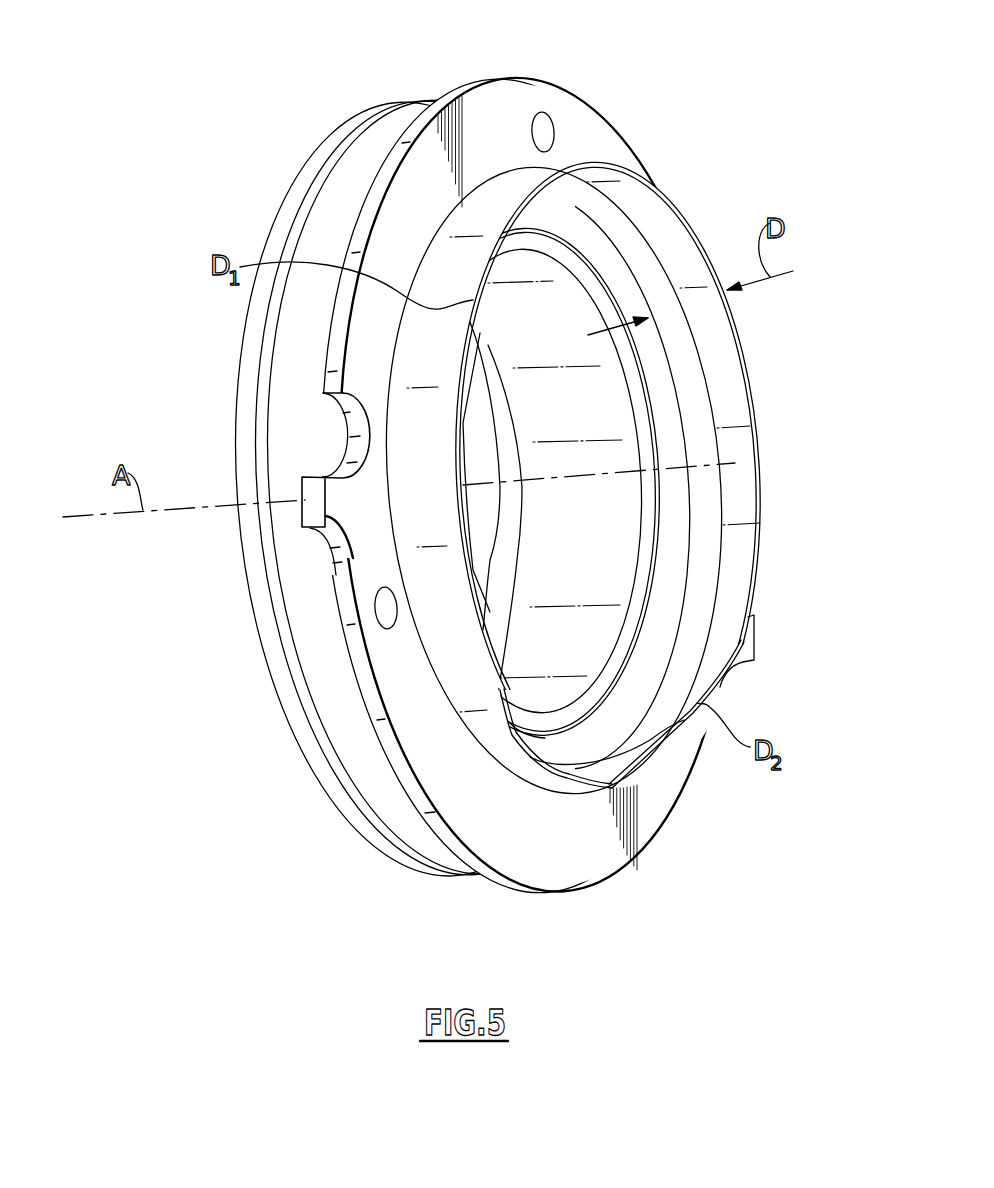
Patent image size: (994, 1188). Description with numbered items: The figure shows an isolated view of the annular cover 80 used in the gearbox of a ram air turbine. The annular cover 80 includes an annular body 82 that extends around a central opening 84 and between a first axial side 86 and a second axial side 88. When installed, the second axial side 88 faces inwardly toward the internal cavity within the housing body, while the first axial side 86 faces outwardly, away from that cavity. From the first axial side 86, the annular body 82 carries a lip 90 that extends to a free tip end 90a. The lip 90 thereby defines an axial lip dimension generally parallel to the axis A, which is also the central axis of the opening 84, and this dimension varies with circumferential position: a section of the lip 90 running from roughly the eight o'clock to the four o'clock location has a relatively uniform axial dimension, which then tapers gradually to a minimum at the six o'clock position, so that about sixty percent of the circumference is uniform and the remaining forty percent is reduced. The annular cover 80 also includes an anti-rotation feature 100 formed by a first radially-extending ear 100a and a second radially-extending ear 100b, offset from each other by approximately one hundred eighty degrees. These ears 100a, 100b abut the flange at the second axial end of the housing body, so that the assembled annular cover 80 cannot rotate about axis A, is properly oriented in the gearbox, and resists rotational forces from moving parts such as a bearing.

The annular cover 80 is at (293, 740).
The annular body 82 is at (503, 105).
The central opening 84 is at (632, 464).
The first axial side 86 is at (645, 815).
The second axial side 88 is at (240, 593).
The lip 90 is at (735, 548).
The free tip end 90a is at (767, 490).
The anti-rotation feature 100 is at (305, 510).
The first radially-extending ear 100a is at (338, 520).
The second radially-extending ear 100b is at (750, 638).